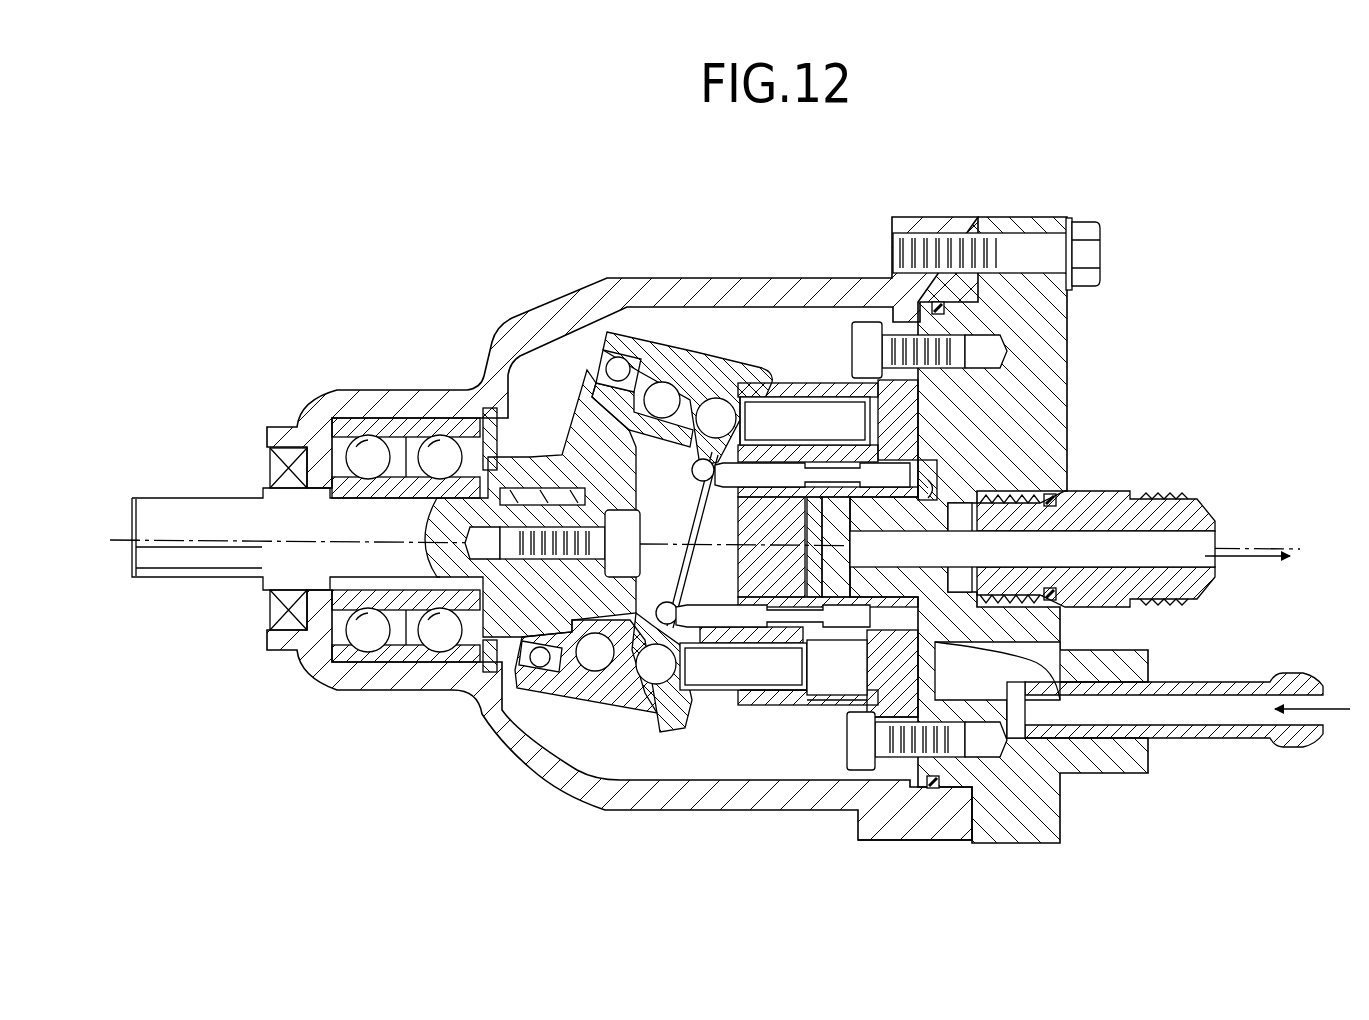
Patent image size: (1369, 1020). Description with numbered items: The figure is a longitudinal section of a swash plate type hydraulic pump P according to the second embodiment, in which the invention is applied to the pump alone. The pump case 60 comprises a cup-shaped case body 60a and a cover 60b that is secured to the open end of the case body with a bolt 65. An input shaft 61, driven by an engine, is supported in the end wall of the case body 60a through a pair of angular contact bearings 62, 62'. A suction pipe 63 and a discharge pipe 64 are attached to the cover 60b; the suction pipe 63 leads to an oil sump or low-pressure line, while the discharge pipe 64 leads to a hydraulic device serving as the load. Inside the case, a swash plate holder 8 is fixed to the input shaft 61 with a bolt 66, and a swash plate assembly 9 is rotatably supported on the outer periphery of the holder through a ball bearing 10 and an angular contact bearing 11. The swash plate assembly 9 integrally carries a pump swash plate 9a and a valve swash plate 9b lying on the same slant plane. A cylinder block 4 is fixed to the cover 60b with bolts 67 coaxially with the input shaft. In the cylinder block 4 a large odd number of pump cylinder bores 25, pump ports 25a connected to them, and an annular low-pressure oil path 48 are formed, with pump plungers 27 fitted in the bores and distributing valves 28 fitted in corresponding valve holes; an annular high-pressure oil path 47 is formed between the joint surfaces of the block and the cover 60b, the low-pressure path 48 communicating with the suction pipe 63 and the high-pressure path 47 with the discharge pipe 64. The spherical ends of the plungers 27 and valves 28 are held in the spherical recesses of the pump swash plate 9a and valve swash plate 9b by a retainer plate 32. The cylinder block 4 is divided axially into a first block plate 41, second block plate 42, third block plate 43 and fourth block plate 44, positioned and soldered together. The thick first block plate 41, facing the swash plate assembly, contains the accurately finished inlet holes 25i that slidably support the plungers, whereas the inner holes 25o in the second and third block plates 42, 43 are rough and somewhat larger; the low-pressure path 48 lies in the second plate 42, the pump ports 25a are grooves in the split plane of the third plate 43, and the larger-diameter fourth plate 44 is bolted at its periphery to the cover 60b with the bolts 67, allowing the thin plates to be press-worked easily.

The swash plate type hydraulic pump P is at (525, 300).
The cylinder block 4 is at (802, 382).
The swash plate holder 8 is at (588, 437).
The swash plate assembly 9 is at (628, 330).
The pump swash plate 9a is at (742, 378).
The valve swash plate 9b is at (692, 472).
The ball bearing 10 is at (612, 367).
The angular contact bearing 11 is at (662, 392).
The pump cylinder bores 25 is at (783, 436).
The pump ports 25a is at (865, 640).
The inlet holes 25i is at (772, 400).
The inner holes 25o is at (870, 410).
The pump plungers 27 is at (801, 402).
The distributing valves 28 is at (890, 465).
The retainer plate 32 is at (670, 602).
The first block plate 41 is at (775, 705).
The second block plate 42 is at (815, 700).
The third block plate 43 is at (870, 717).
The fourth block plate 44 is at (897, 800).
The annular high-pressure oil path 47 is at (937, 481).
The annular low-pressure oil path 48 is at (805, 520).
The pump case 60 is at (783, 203).
The case body 60a is at (800, 283).
The cover 60b is at (1000, 218).
The input shaft 61 is at (208, 505).
The angular contact bearing 62 is at (406, 506).
The angular contact bearing 62' is at (440, 498).
The suction pipe 63 is at (1210, 740).
The discharge pipe 64 is at (1195, 520).
The bolt 65 is at (1090, 265).
The bolt 66 is at (640, 545).
The bolts 67 is at (866, 322).